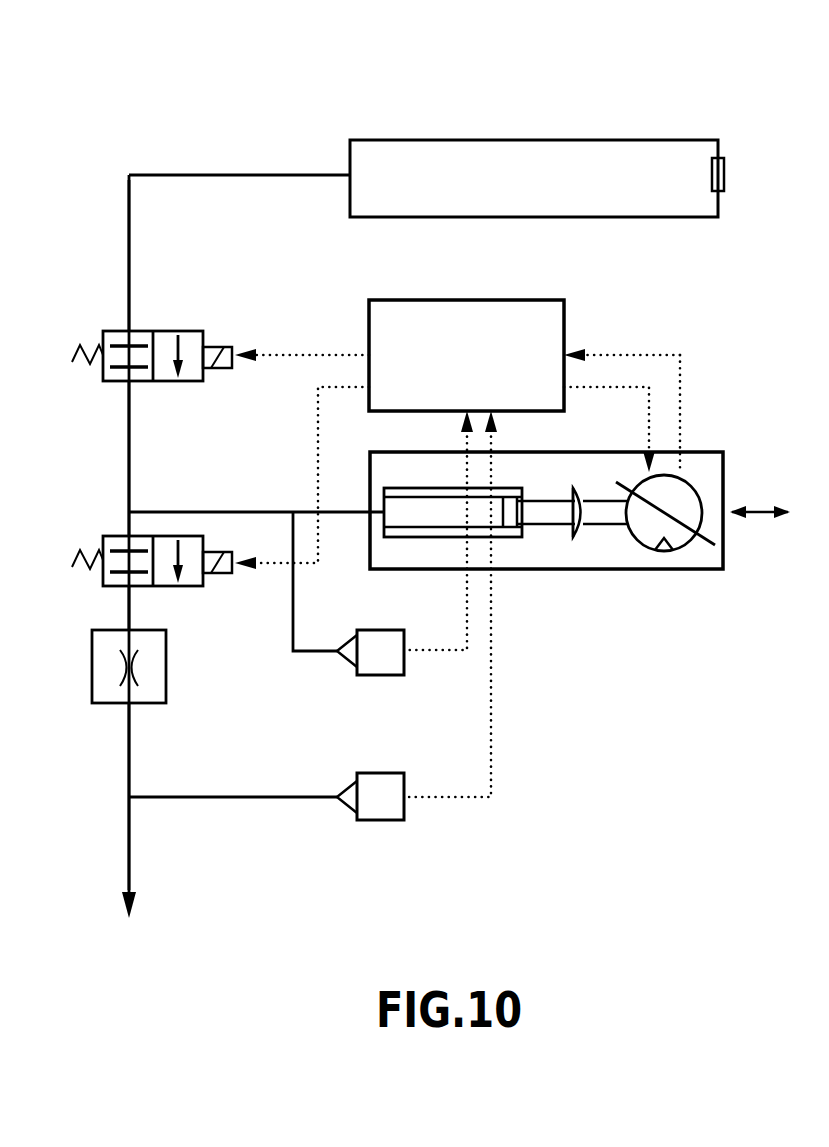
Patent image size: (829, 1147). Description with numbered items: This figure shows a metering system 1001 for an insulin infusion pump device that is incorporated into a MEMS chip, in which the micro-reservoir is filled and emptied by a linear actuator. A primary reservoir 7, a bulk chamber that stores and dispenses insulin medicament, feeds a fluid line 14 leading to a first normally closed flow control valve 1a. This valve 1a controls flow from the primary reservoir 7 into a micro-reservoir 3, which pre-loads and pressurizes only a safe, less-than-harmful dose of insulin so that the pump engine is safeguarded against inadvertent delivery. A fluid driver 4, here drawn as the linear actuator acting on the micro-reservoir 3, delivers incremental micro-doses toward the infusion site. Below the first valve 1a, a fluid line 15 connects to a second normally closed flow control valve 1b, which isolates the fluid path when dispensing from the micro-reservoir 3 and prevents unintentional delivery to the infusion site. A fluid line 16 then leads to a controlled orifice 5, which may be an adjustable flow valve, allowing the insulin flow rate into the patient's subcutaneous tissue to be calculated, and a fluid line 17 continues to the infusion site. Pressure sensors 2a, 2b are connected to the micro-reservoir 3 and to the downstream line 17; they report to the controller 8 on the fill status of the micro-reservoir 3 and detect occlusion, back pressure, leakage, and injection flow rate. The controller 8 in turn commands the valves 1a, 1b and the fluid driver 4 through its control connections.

The metering system 1001 is at (137, 82).
The first N/C flow control valve 1a is at (120, 331).
The second N/C flow control valve 1b is at (120, 536).
The pressure sensor 2a is at (377, 630).
The pressure sensor 2b is at (378, 820).
The micro-reservoir 3 is at (420, 488).
The fluid driver 4 is at (688, 543).
The controlled orifice 5 is at (166, 676).
The primary reservoir 7 is at (687, 218).
The controller 8 is at (564, 330).
The fluid line 14 is at (129, 233).
The fluid line 15 is at (129, 426).
The fluid line 16 is at (129, 614).
The fluid line 17 is at (129, 762).